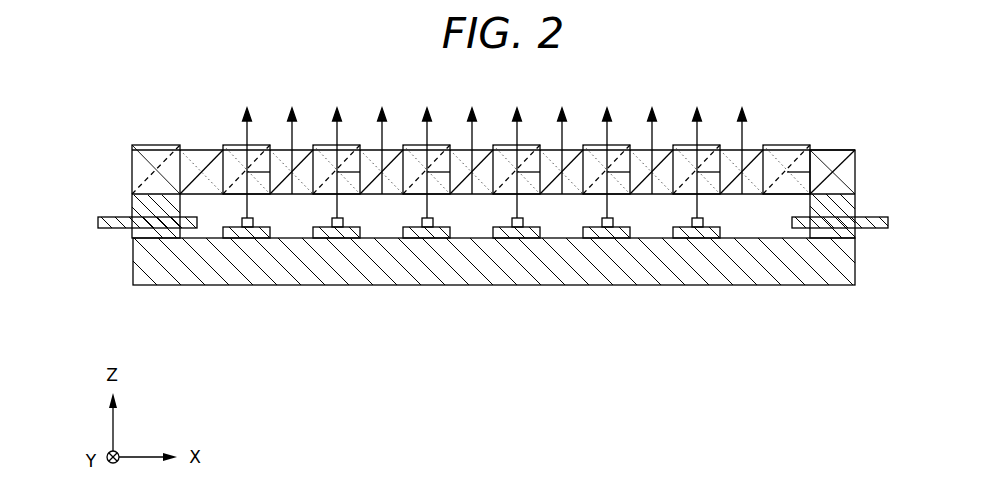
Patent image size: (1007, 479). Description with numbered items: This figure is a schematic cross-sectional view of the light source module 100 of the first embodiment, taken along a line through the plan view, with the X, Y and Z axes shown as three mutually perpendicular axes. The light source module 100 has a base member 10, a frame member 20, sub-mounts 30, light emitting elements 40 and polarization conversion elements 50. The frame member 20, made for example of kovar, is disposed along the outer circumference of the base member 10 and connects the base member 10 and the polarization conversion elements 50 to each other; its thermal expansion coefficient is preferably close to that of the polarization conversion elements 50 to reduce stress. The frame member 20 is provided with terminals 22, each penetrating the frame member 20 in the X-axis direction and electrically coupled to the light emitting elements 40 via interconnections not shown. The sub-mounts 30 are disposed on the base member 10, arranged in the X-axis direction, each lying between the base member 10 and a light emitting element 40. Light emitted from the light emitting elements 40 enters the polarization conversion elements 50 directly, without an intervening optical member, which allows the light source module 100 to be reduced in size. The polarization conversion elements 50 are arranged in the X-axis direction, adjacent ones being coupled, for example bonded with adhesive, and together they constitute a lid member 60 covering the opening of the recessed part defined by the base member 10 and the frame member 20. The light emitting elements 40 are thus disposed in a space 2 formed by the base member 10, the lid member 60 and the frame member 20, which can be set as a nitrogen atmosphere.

The light source module 100 is at (864, 126).
The lid member 60 is at (130, 136).
The polarization conversion element 50 is at (403, 108).
The frame member 20 is at (153, 208).
The terminal 22 is at (113, 230).
The light emitting element 40 is at (247, 238).
The sub-mount 30 is at (339, 238).
The base member 10 is at (475, 263).
The space 2 is at (486, 217).